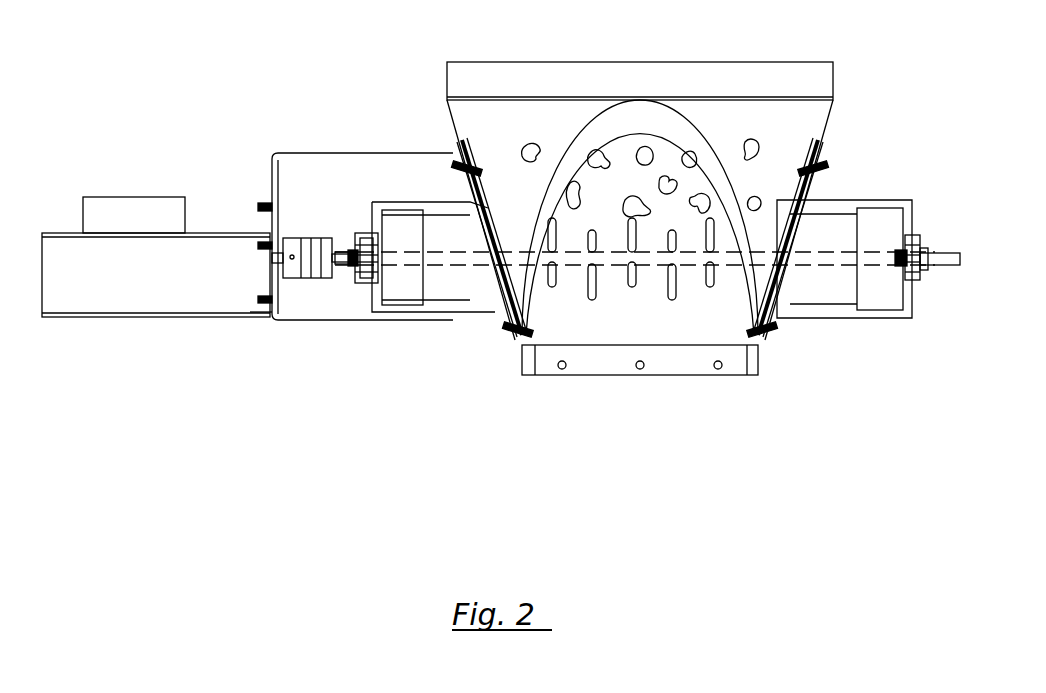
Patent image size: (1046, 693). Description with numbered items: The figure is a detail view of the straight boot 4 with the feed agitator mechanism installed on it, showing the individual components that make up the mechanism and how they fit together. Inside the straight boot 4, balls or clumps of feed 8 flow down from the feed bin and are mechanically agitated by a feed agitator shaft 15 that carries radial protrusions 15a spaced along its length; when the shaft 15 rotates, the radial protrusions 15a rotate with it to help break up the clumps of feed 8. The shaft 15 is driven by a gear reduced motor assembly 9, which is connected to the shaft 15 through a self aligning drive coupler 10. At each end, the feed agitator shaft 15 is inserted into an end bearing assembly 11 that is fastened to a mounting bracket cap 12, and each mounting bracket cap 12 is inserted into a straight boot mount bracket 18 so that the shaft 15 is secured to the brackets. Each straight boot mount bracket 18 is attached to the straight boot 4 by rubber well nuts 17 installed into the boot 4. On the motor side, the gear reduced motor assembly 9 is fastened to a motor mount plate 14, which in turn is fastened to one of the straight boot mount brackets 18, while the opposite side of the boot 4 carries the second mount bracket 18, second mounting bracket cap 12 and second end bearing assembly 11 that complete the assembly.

The straight boot 4 is at (607, 358).
The feed 8 is at (596, 150).
The gear reduced motor assembly 9 is at (207, 233).
The self aligning drive coupler 10 is at (299, 238).
The end bearing assembly 11 is at (366, 236).
The mounting bracket cap 12 is at (380, 205).
The motor mount plate 14 is at (300, 322).
The feed agitator shaft 15 is at (580, 258).
The radial protrusions 15a is at (665, 300).
The rubber well nuts 17 is at (462, 160).
The straight boot mount bracket 18 is at (440, 290).